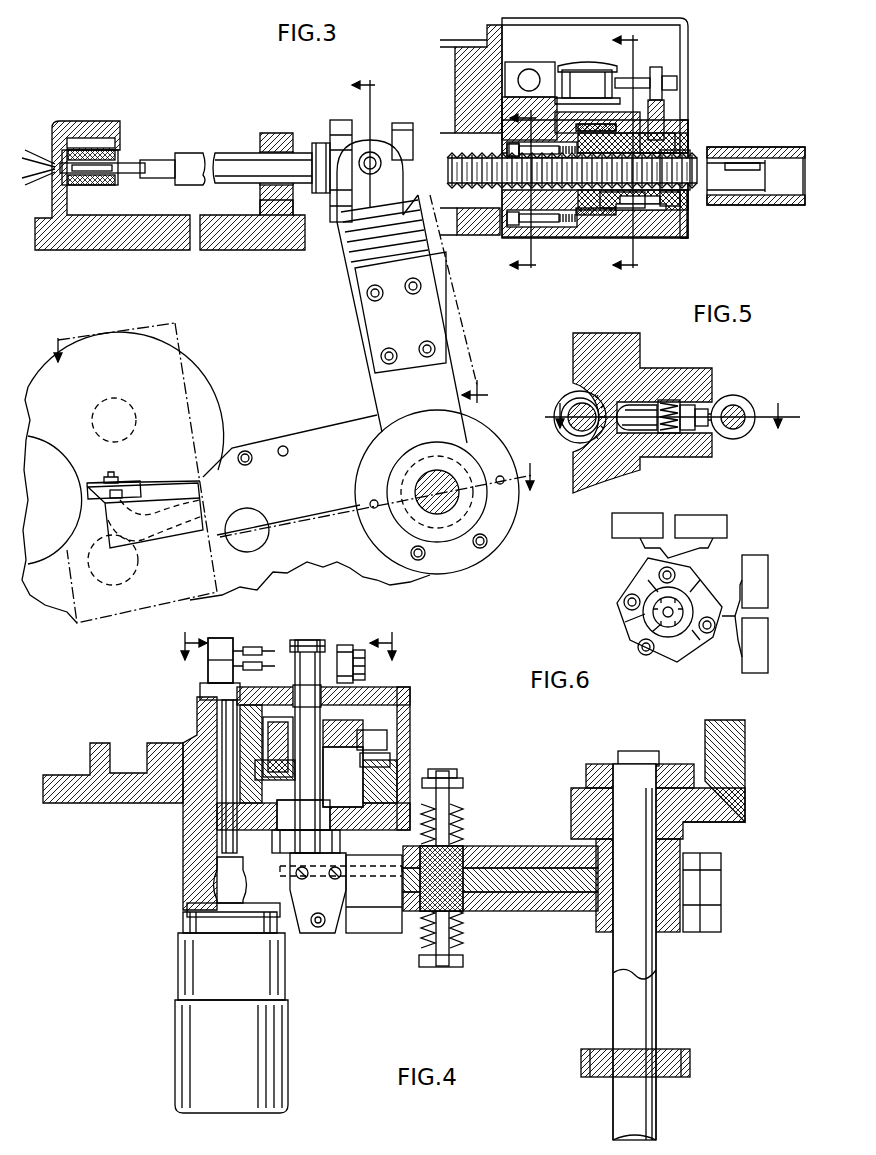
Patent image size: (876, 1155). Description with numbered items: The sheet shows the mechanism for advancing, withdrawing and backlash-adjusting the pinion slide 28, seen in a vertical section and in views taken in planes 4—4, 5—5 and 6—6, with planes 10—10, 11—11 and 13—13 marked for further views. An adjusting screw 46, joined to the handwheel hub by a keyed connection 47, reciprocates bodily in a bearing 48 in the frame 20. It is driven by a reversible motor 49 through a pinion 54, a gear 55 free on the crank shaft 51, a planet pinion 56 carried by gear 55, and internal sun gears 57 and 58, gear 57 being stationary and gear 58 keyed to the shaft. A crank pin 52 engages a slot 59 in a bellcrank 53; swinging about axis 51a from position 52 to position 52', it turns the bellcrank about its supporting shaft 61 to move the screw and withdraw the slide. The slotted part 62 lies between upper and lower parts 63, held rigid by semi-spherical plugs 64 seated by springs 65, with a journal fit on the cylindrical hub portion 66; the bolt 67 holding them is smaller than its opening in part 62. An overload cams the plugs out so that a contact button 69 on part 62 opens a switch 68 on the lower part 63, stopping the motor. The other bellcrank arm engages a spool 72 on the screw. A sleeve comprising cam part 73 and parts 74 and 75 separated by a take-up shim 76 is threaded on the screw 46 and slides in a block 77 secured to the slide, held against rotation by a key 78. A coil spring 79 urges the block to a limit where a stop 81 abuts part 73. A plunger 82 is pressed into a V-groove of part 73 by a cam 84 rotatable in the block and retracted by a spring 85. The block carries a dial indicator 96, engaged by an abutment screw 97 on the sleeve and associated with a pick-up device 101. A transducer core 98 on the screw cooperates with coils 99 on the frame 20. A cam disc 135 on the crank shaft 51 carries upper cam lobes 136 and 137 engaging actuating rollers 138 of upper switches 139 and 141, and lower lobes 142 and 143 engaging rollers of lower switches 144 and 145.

In FIG. 3, the section plane 4— 4 is at (294, 430).
In FIG. 3, the section plane 5— 5 is at (634, 154).
In FIG. 4, the section plane 6— 6 is at (290, 646).
In FIG. 3, the section plane 10— 10 is at (428, 241).
In FIG. 3, the section plane 11— 11 is at (535, 193).
In FIG. 5, the section plane 13— 13 is at (670, 415).
In FIG. 3, the frame 20 is at (78, 121).
In FIG. 4, the frame 20 is at (110, 797).
In FIG. 3, the slide 28 is at (490, 228).
In FIG. 3, the adjusting screw 46 is at (695, 162).
In FIG. 5, the adjusting screw 46 is at (573, 407).
In FIG. 3, the keyed connection 47 is at (745, 150).
In FIG. 3, the bearing 48 is at (258, 192).
In FIG. 3, the reversible motor 49 is at (65, 490).
In FIG. 4, the reversible motor 49 is at (238, 1051).
In FIG. 6, the crank shaft 51 is at (672, 608).
In FIG. 4, the crank shaft 51 is at (316, 714).
In FIG. 3, the crank axis 51a is at (100, 483).
In FIG. 4, the crank axis 51a is at (308, 645).
In FIG. 3, the crank pin 52 is at (109, 572).
In FIG. 4, the crank pin 52 is at (341, 856).
In FIG. 3, the crank pin withdrawn position 52' is at (95, 420).
In FIG. 3, the bellcrank 53 is at (392, 392).
In FIG. 4, the bellcrank 53 is at (592, 910).
In FIG. 4, the pinion 54 is at (215, 722).
In FIG. 4, the gear 55 is at (365, 725).
In FIG. 4, the planet pinion 56 is at (288, 740).
In FIG. 4, the stationary internal sun gear 57 is at (380, 740).
In FIG. 4, the internal sun gear 58 is at (380, 760).
In FIG. 3, the slot 59 is at (165, 497).
In FIG. 3, the supporting shaft 61 is at (435, 475).
In FIG. 4, the supporting shaft 61 is at (652, 950).
In FIG. 4, the slotted bellcrank part 62 is at (522, 870).
In FIG. 4, the upper and lower bellcrank parts 63 is at (552, 850).
In FIG. 4, the semi-spherical plugs 64 is at (462, 882).
In FIG. 4, the springs 65 is at (462, 806).
In FIG. 4, the cylindrical hub portion 66 is at (708, 880).
In FIG. 3, the bolt 67 is at (252, 522).
In FIG. 4, the bolt 67 is at (445, 964).
In FIG. 3, the switch 68 is at (204, 497).
In FIG. 4, the switch 68 is at (375, 925).
In FIG. 3, the contact button 69 is at (116, 488).
In FIG. 4, the contact button 69 is at (322, 930).
In FIG. 3, the spool 72 is at (402, 126).
In FIG. 3, the cam part 73 is at (664, 142).
In FIG. 5, the cam part 73 is at (580, 392).
In FIG. 3, the sleeve part 74 is at (628, 200).
In FIG. 3, the sleeve part 75 is at (517, 213).
In FIG. 3, the backlash take-up shim 76 is at (537, 222).
In FIG. 3, the block 77 is at (682, 234).
In FIG. 5, the block 77 is at (628, 478).
In FIG. 3, the key 78 is at (657, 218).
In FIG. 3, the coil spring 79 is at (588, 213).
In FIG. 3, the stop 81 is at (686, 214).
In FIG. 5, the plunger 82 is at (642, 403).
In FIG. 5, the cam 84 is at (734, 395).
In FIG. 5, the spring 85 is at (677, 402).
In FIG. 3, the dial indicator 96 is at (583, 75).
In FIG. 3, the abutment screw 97 is at (638, 82).
In FIG. 3, the transducer core 98 is at (105, 172).
In FIG. 3, the transducer coils 99 is at (95, 150).
In FIG. 3, the pick-up device 101 is at (532, 65).
In FIG. 4, the cam disc 135 is at (352, 648).
In FIG. 6, the upper cam lobe 136 is at (648, 573).
In FIG. 6, the upper cam lobe 137 is at (643, 660).
In FIG. 4, the upper cam lobe 137 is at (362, 665).
In FIG. 4, the actuating rollers 138 is at (252, 662).
In FIG. 6, the upper switch 139 is at (615, 524).
In FIG. 6, the upper switch 141 is at (757, 648).
In FIG. 4, the upper switch 141 is at (228, 635).
In FIG. 6, the lower cam lobe 142 is at (710, 635).
In FIG. 6, the lower cam lobe 143 is at (622, 603).
In FIG. 4, the lower cam lobe 143 is at (210, 692).
In FIG. 6, the lower switch 144 is at (700, 522).
In FIG. 6, the lower switch 145 is at (752, 563).
In FIG. 4, the lower switch 145 is at (208, 668).